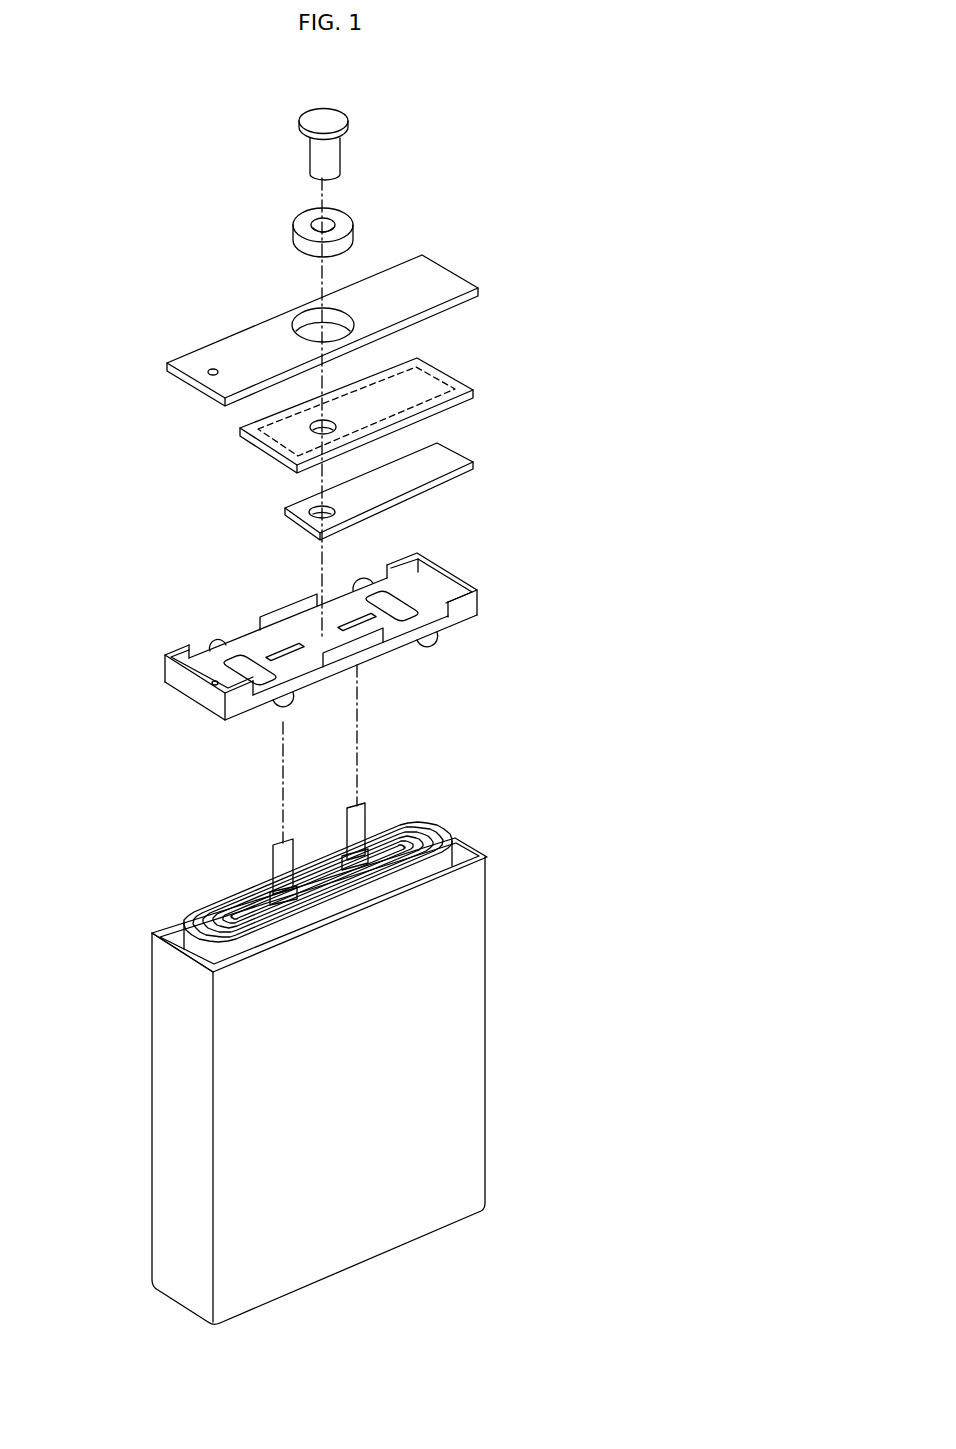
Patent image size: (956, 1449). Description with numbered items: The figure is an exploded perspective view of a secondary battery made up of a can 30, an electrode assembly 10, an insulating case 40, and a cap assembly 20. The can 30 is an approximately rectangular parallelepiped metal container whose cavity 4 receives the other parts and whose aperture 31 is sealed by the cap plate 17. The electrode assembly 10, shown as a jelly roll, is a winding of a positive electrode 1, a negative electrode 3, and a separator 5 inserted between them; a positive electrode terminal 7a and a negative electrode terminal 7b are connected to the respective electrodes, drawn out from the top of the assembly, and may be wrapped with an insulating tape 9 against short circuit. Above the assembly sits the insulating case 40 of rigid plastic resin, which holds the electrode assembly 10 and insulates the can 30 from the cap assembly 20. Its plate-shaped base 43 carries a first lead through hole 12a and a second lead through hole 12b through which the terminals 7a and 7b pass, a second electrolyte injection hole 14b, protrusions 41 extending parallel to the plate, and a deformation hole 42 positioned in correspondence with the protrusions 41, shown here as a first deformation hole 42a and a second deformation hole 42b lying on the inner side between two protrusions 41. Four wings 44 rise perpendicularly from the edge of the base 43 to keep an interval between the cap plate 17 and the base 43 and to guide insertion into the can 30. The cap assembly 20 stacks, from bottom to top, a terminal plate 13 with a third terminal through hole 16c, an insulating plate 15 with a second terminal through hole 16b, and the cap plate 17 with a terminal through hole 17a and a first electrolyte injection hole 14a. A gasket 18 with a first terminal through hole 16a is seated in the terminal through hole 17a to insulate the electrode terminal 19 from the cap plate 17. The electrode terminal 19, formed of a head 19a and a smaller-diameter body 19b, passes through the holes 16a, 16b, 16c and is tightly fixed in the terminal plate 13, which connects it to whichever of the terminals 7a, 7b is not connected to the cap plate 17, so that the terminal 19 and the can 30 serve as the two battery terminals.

The positive electrode 1 is at (428, 820).
The negative electrode 3 is at (453, 840).
The cavity 4 is at (173, 933).
The separator 5 is at (438, 823).
The positive electrode terminal 7a is at (283, 858).
The negative electrode terminal 7b is at (353, 827).
The insulating tape 9 is at (250, 884).
The electrode assembly 10 is at (345, 839).
The first lead through hole 12a is at (283, 648).
The second lead through hole 12b is at (355, 620).
The terminal plate 13 is at (388, 477).
The first electrolyte injection hole 14a is at (211, 367).
The second electrolyte injection hole 14b is at (208, 679).
The insulating plate 15 is at (373, 408).
The first terminal through hole 16a is at (337, 227).
The second terminal through hole 16b is at (305, 431).
The third terminal through hole 16c is at (312, 513).
The cap plate 17 is at (350, 329).
The terminal through hole 17a is at (350, 325).
The gasket 18 is at (425, 213).
The electrode terminal 19 is at (423, 134).
The head 19a is at (340, 116).
The body 19b is at (341, 149).
The cap assembly 20 is at (376, 318).
The can 30 is at (320, 1081).
The aperture 31 is at (473, 845).
The insulating case 40 is at (347, 629).
The protrusion 41 is at (216, 641).
The deformation hole 42 is at (331, 671).
The first deformation hole 42a is at (294, 698).
The second deformation hole 42b is at (393, 616).
The base 43 is at (440, 592).
The wing 44 is at (420, 565).